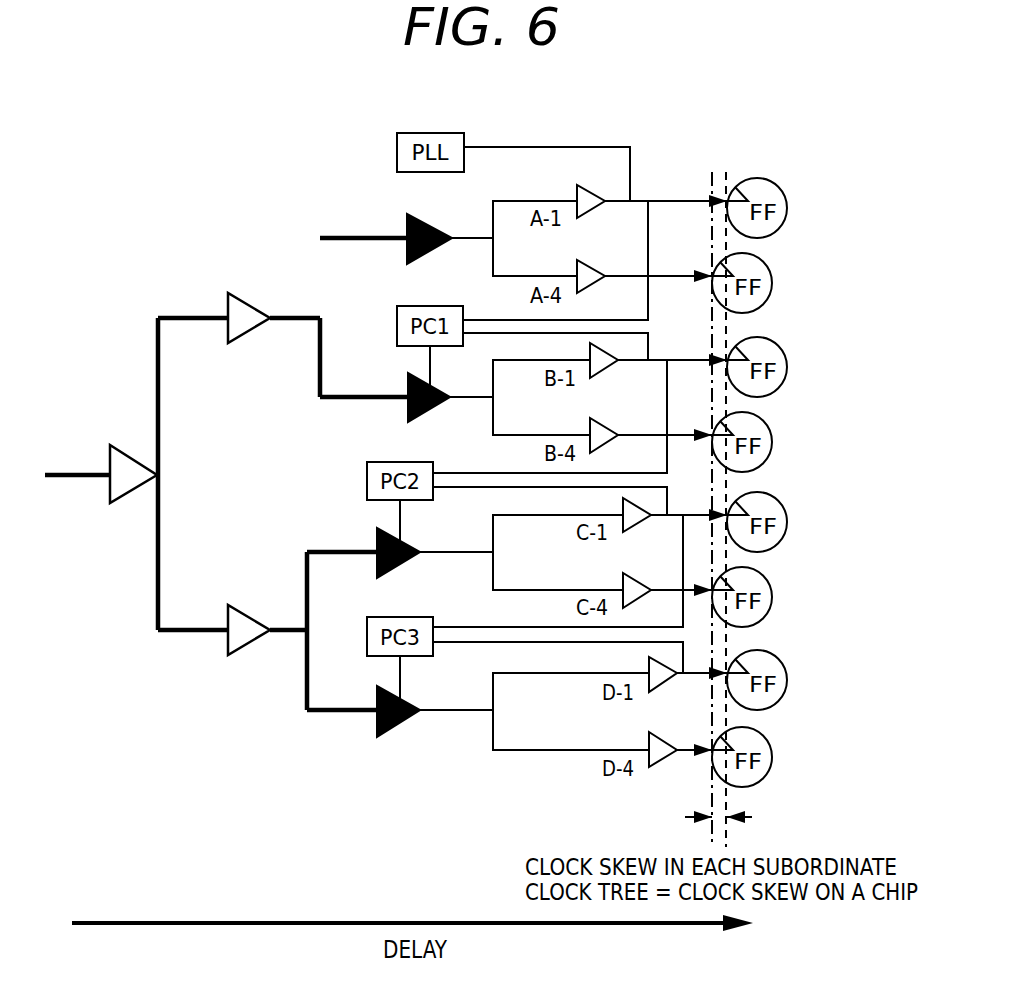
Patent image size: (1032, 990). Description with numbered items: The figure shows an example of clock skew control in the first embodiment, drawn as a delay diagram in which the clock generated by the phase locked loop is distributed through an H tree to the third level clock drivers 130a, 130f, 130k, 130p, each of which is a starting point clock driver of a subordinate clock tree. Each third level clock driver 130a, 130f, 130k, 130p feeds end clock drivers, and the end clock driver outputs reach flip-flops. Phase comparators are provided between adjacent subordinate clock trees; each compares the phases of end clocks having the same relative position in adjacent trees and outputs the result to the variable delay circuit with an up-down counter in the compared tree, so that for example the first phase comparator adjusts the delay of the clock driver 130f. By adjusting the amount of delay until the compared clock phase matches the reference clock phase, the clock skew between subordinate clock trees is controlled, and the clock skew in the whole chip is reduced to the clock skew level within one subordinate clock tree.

The third level clock driver 130a is at (410, 229).
The third level clock driver 130f is at (409, 412).
The third level clock driver 130k is at (378, 542).
The third level clock driver 130p is at (378, 722).